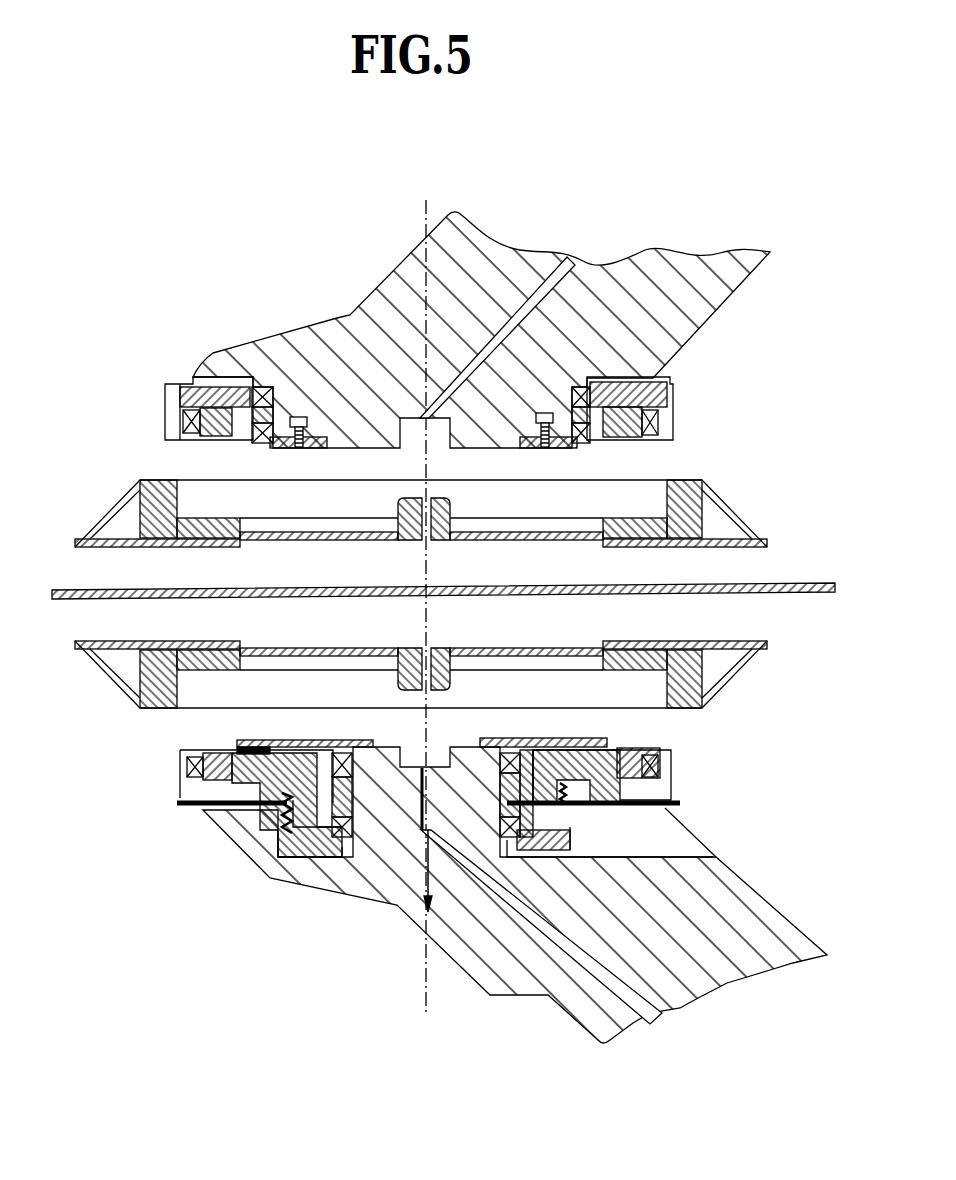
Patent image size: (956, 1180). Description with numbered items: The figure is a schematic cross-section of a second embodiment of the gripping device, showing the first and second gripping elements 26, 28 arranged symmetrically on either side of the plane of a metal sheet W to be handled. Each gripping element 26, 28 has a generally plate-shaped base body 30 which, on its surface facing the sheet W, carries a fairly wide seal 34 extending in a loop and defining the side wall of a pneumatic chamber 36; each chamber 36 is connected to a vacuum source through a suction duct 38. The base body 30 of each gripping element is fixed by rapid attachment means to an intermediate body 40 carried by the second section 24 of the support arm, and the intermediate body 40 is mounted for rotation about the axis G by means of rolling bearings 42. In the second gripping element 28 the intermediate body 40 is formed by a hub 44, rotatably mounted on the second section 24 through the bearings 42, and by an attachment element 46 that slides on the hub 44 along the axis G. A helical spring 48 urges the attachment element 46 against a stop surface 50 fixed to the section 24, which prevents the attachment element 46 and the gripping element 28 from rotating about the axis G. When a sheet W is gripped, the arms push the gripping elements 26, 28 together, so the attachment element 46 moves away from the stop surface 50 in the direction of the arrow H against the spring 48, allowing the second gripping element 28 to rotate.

The second section 24 is at (700, 287).
The first gripping element 26 is at (745, 447).
The second gripping element 28 is at (757, 663).
The base body 30 is at (700, 480).
The seal 34 is at (170, 547).
The pneumatic chamber 36 is at (355, 542).
The suction duct 38 is at (545, 290).
The intermediate body 40 is at (653, 393).
The rolling bearings 42 is at (297, 417).
The hub 44 is at (218, 447).
The attachment element 46 is at (553, 738).
The helical spring 48 is at (270, 847).
The stop surface 50 is at (258, 741).
The metal sheet W is at (786, 593).
The axis G is at (430, 953).
The arrow H is at (396, 908).